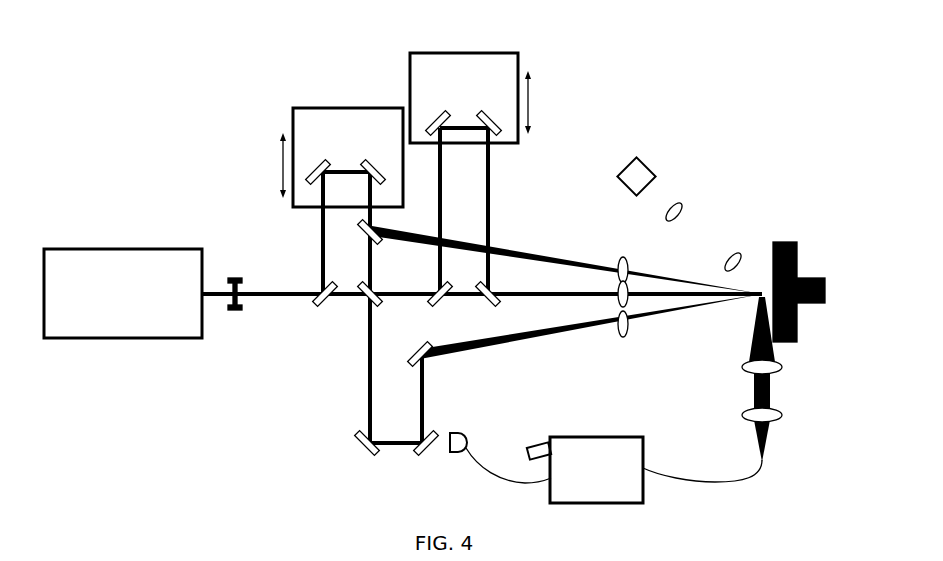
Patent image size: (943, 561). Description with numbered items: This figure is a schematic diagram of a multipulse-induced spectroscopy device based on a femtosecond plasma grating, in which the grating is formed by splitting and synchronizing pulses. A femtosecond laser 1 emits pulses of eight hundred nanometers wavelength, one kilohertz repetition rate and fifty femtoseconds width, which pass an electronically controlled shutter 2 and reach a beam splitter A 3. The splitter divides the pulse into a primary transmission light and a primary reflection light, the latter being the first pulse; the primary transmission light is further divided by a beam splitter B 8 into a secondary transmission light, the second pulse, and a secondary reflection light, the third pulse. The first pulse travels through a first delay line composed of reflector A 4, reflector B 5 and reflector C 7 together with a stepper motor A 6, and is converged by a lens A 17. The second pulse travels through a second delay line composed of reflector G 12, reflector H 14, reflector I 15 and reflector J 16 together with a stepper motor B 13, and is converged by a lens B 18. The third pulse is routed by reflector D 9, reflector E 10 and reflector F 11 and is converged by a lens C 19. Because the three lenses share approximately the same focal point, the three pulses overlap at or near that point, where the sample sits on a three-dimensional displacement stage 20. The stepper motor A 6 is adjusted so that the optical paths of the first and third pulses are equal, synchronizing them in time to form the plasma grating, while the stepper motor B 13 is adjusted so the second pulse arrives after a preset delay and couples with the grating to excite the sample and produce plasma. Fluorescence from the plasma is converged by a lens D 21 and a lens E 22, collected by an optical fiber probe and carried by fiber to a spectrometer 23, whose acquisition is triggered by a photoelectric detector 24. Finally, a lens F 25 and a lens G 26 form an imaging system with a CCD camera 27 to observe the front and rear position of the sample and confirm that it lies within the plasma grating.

The femtosecond laser 1 is at (123, 293).
The electronically controlled shutter 2 is at (237, 310).
The beam splitter A 3 is at (318, 303).
The reflector A 4 is at (318, 162).
The reflector B 5 is at (374, 162).
The stepper motor A 6 is at (307, 108).
The reflector C 7 is at (366, 238).
The beam splitter B 8 is at (376, 288).
The reflector D 9 is at (363, 452).
The reflector E 10 is at (432, 450).
The reflector F 11 is at (417, 347).
The reflector G 12 is at (441, 304).
The stepper motor B 13 is at (502, 53).
The reflector H 14 is at (437, 112).
The reflector I 15 is at (492, 112).
The reflector J 16 is at (489, 305).
The lens A 17 is at (620, 258).
The lens B 18 is at (620, 297).
The lens C 19 is at (623, 336).
The three-dimensional displacement stage 20 is at (808, 278).
The lens D 21 is at (775, 371).
The lens E 22 is at (775, 420).
The spectrometer 23 is at (585, 470).
The photoelectric detector 24 is at (466, 432).
The lens F 25 is at (741, 251).
The lens G 26 is at (681, 202).
The CCD camera 27 is at (638, 157).